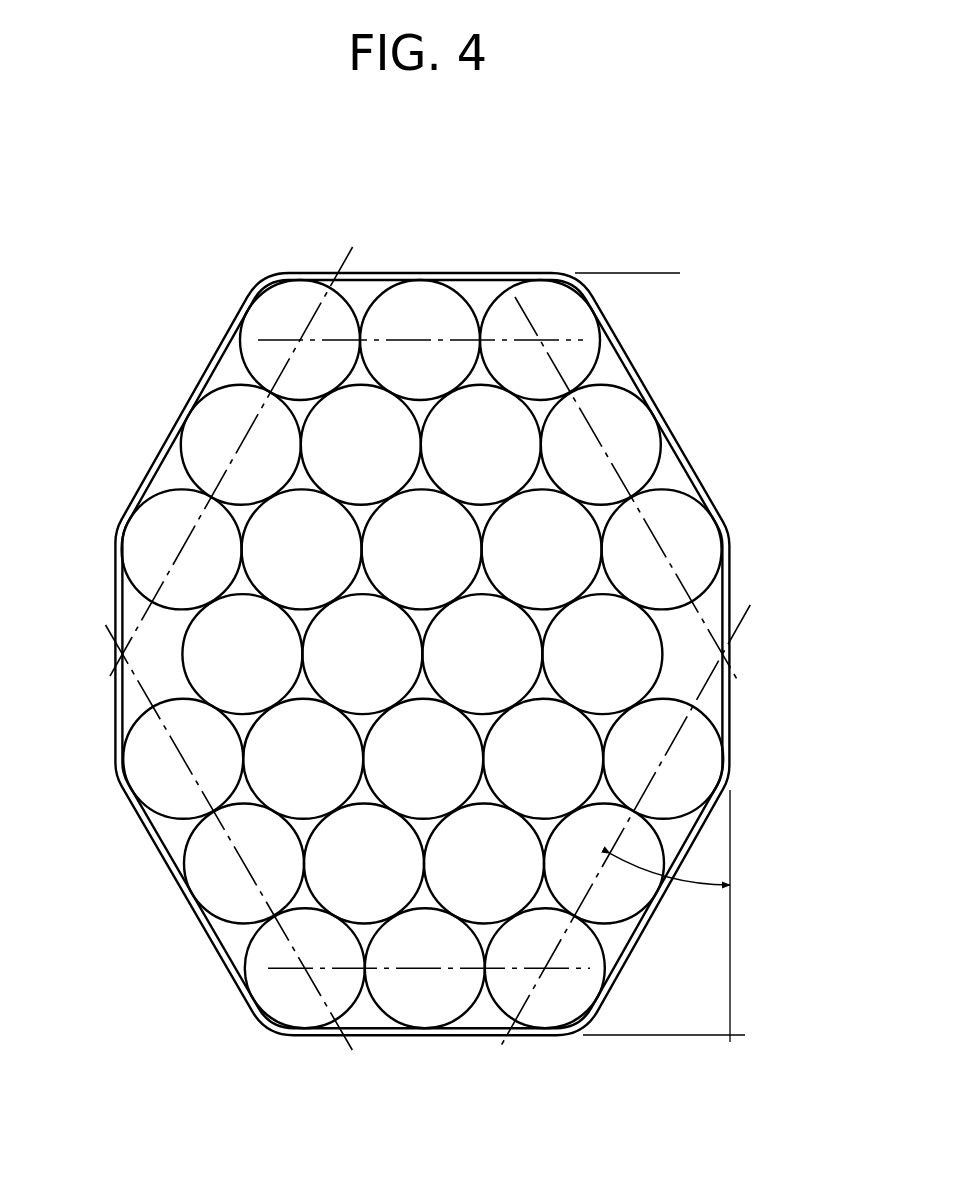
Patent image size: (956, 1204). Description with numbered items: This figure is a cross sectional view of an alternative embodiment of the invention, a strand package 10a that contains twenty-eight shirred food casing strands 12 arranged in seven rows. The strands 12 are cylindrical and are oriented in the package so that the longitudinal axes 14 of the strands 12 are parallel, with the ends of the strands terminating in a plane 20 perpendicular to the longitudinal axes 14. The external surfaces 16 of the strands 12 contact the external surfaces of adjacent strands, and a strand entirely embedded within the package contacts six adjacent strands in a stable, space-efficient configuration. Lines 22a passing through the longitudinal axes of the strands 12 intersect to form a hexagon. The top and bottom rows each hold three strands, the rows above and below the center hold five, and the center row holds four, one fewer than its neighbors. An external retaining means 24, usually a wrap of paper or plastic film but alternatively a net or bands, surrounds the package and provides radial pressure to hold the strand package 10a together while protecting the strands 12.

The strand package 10a is at (166, 399).
The shirred food casing strand 12 is at (677, 515).
The longitudinal axis 14 is at (168, 762).
The external surface 16 is at (185, 652).
The plane 20 is at (181, 899).
The lines 22a is at (590, 413).
The external retaining means 24 is at (620, 977).